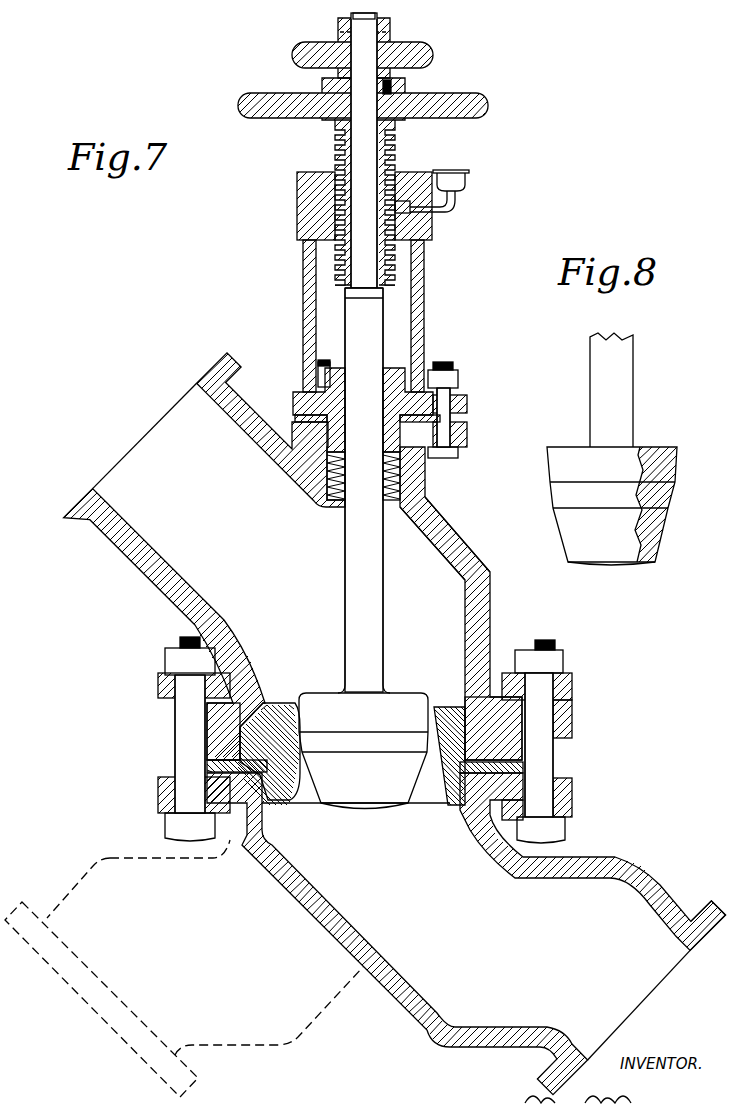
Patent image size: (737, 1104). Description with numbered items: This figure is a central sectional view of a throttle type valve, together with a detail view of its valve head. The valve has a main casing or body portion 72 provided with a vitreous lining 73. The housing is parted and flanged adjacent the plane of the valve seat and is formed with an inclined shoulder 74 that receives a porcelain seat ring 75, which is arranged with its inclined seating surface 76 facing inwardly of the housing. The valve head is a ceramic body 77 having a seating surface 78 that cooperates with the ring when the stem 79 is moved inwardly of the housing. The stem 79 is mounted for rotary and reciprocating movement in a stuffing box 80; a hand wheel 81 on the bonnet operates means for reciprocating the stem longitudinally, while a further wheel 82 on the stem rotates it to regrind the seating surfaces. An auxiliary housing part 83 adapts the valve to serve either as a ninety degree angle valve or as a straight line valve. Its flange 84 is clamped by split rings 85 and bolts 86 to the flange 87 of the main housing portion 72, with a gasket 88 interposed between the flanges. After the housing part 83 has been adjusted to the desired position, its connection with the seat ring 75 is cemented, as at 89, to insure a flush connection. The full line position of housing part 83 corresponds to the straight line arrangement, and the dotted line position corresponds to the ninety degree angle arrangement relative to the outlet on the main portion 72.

In FIG. 7, the main casing or body portion 72 is at (475, 565).
In FIG. 7, the vitreous lining 73 is at (428, 545).
In FIG. 7, the inclined shoulder 74 is at (490, 693).
In FIG. 7, the porcelain seat ring 75 is at (443, 714).
In FIG. 7, the inclined seating surface 76 is at (293, 715).
In FIG. 7, the ceramic body 77 is at (335, 790).
In FIG. 8, the ceramic body 77 is at (602, 548).
In FIG. 7, the seating surface 78 is at (392, 745).
In FIG. 8, the seating surface 78 is at (562, 492).
In FIG. 7, the stem 79 is at (348, 577).
In FIG. 8, the stem 79 is at (633, 404).
In FIG. 7, the stuffing box 80 is at (400, 472).
In FIG. 7, the hand wheel 81 is at (488, 103).
In FIG. 7, the wheel 82 is at (434, 53).
In FIG. 7, the auxiliary housing part 83 is at (108, 860).
In FIG. 7, the flange 84 is at (237, 822).
In FIG. 7, the split rings 85 is at (160, 686).
In FIG. 7, the bolts 86 is at (190, 748).
In FIG. 7, the flange 87 is at (207, 720).
In FIG. 7, the gasket 88 is at (523, 768).
In FIG. 7, the cemented connection 89 is at (463, 805).